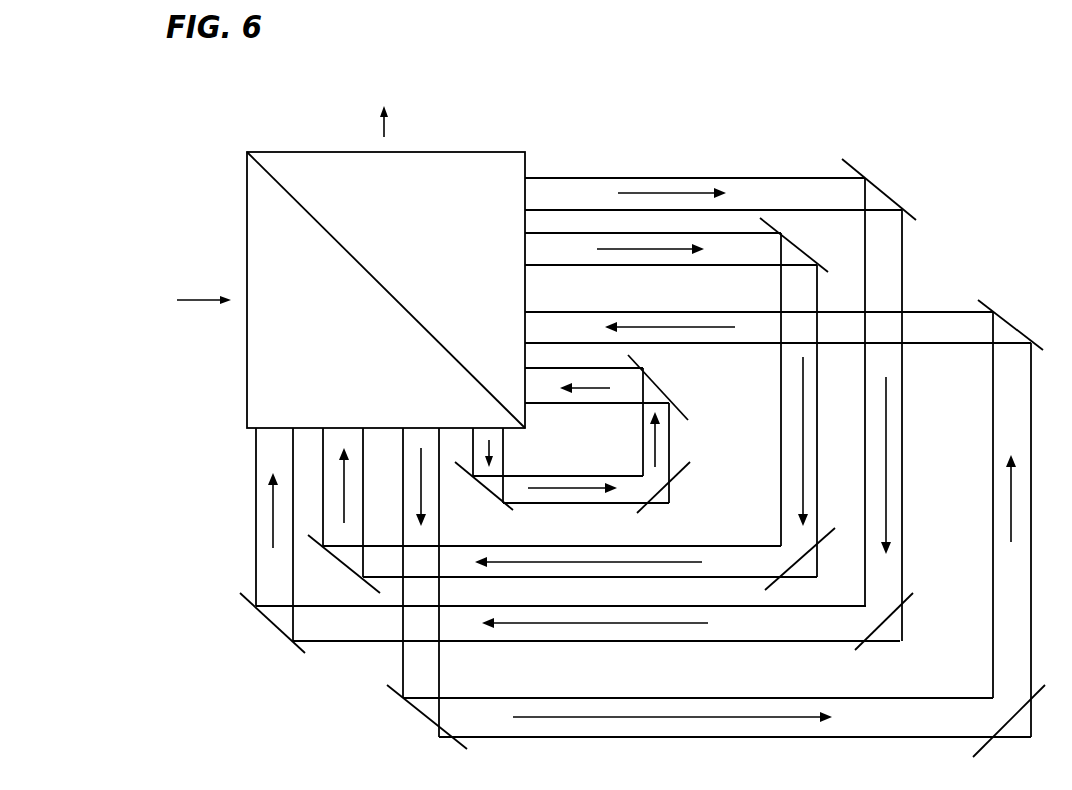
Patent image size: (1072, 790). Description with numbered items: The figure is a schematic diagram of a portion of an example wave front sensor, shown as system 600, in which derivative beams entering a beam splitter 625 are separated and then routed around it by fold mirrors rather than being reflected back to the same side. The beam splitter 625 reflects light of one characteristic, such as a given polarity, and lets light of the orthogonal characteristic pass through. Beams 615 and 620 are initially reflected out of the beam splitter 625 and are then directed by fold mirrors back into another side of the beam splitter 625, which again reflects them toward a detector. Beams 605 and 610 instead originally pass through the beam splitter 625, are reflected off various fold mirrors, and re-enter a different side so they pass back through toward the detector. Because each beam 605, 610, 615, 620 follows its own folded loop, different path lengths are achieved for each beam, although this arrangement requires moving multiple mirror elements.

The system 600 is at (716, 82).
The beam 605 is at (602, 183).
The beam 610 is at (545, 255).
The beam 615 is at (932, 330).
The beam 620 is at (538, 398).
The beam splitter 625 is at (283, 160).